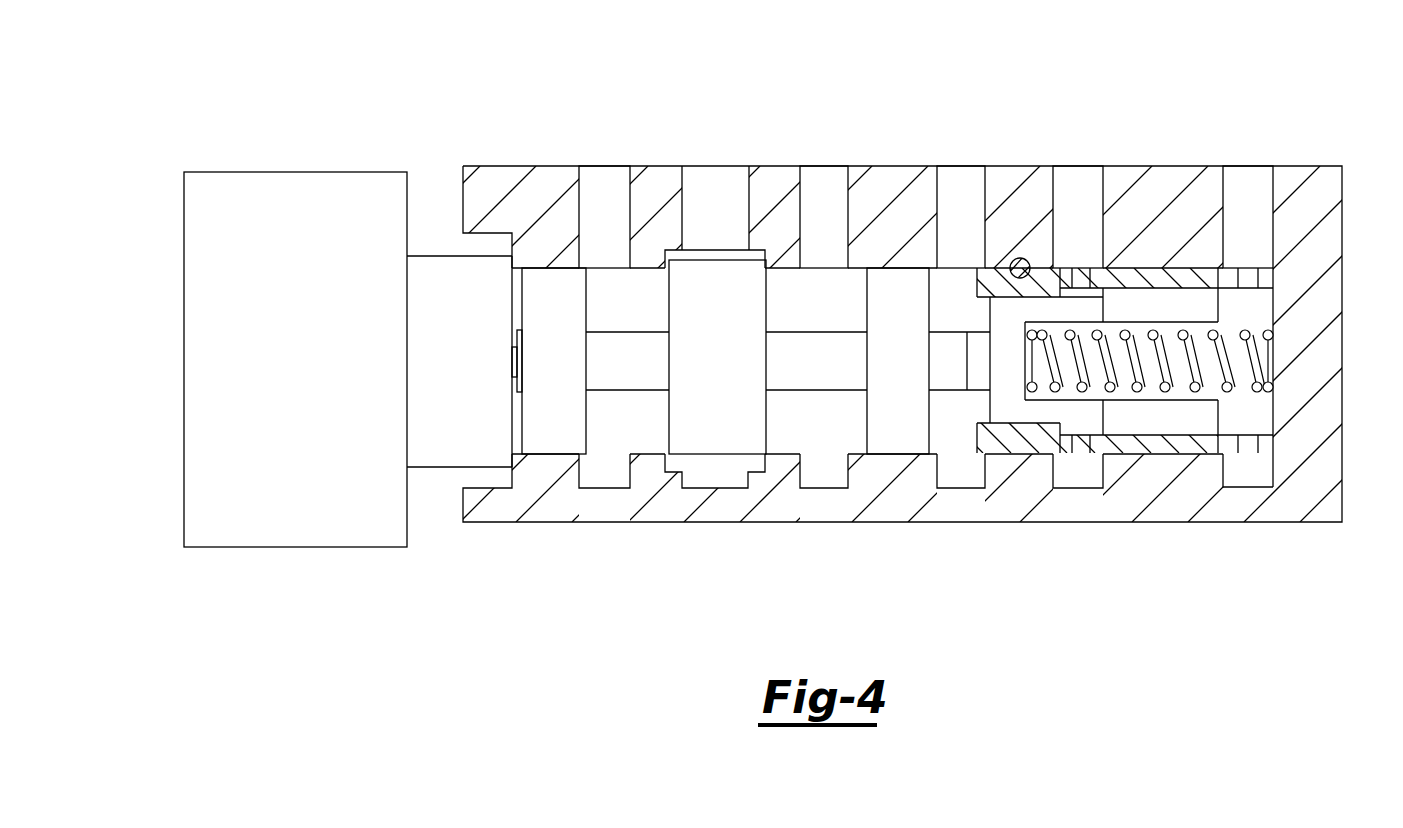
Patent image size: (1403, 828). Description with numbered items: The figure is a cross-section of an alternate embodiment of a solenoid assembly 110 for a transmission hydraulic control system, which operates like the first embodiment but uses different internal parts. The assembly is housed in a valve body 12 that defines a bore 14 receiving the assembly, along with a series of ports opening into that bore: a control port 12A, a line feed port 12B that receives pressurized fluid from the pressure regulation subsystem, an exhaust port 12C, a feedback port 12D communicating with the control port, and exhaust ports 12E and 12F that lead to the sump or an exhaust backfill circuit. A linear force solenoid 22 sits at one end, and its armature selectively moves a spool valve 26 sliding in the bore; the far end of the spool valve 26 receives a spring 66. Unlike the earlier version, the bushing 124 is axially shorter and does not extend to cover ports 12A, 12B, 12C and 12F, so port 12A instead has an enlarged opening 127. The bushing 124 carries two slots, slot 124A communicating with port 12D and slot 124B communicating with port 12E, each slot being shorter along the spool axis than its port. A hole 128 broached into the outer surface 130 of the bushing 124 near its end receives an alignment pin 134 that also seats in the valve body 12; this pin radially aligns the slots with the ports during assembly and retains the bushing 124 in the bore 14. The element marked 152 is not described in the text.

The solenoid assembly 110 is at (847, 64).
The valve body 12 is at (1322, 474).
The port 12F is at (605, 192).
The fluid port 12A is at (718, 192).
The fluid port 12B is at (830, 192).
The port 12C is at (960, 192).
The port 12D is at (1065, 192).
The fluid port 12E is at (1235, 192).
The bore 14 is at (618, 487).
The solenoid 22 is at (250, 162).
The spool valve 26 is at (756, 419).
The enlarged opening 127 is at (668, 254).
The hole 128 is at (1027, 282).
The alignment pin 134 is at (1016, 258).
The spring seat flange 152 is at (982, 442).
The outer surface 130 is at (1058, 450).
The bushing 124 is at (1028, 443).
The slot 124A is at (1080, 282).
The slot 124B is at (1249, 282).
The spring 66 is at (1250, 335).